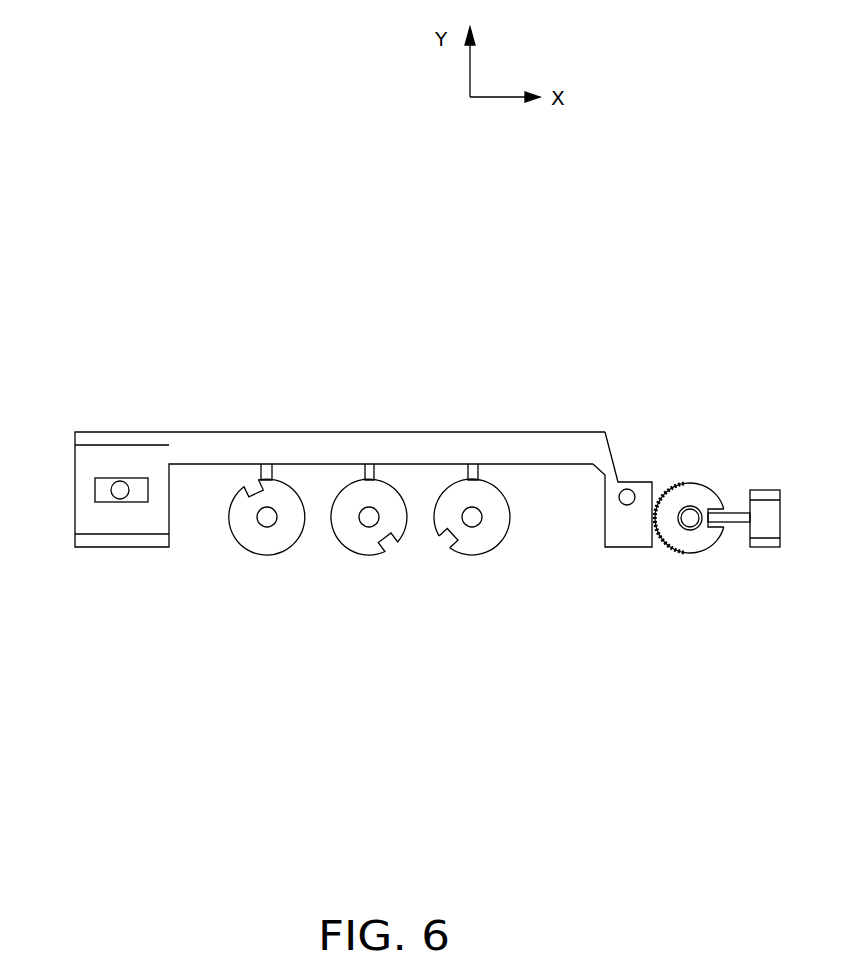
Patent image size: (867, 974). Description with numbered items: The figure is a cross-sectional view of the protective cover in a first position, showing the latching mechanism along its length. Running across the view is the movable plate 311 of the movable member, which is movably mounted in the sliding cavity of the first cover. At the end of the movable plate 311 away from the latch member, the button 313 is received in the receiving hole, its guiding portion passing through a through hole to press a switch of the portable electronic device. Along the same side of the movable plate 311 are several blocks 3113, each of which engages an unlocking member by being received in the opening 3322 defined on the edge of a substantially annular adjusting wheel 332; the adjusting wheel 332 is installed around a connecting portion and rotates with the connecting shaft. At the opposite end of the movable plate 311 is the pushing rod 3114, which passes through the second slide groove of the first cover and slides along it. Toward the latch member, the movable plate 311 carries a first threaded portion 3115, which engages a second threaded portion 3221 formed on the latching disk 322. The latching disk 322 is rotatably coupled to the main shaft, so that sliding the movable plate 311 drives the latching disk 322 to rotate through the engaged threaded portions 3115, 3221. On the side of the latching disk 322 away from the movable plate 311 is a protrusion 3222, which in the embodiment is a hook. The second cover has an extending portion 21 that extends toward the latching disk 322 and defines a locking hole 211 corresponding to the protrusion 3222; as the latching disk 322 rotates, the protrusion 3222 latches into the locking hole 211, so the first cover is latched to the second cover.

The movable plate 311 is at (338, 432).
The button 313 is at (120, 491).
The block 3113 is at (472, 478).
The pushing rod 3114 is at (618, 503).
The first threaded portion 3115 is at (652, 480).
The adjusting wheel 332 is at (369, 553).
The opening 3322 is at (445, 538).
The latching disk 322 is at (721, 527).
The second threaded portion 3221 is at (673, 480).
The protrusion 3222 is at (722, 505).
The locking hole 211 is at (718, 512).
The extending portion 21 is at (768, 522).